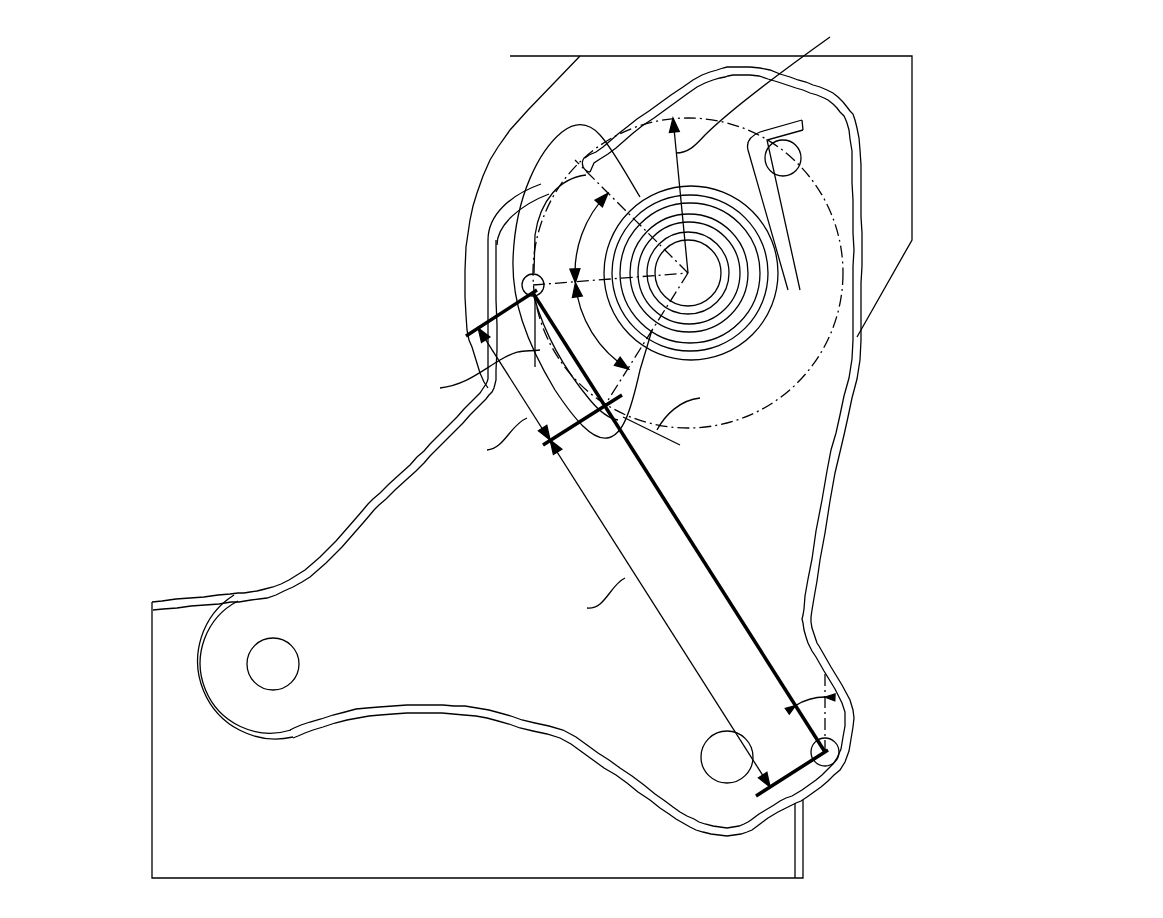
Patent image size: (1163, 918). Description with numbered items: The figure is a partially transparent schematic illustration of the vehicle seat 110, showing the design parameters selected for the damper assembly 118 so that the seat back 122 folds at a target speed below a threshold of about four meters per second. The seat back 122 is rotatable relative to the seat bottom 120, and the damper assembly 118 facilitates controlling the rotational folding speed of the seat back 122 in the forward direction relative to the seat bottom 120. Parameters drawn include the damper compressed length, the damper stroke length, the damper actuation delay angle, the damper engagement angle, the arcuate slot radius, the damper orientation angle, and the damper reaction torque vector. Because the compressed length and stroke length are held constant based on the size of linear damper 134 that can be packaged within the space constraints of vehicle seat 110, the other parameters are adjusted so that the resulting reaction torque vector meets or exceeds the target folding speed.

The vehicle seat 110 is at (445, 80).
The damper assembly 118 is at (882, 408).
The seat bottom 120 is at (806, 840).
The seat back 122 is at (887, 290).
The linear damper 134 is at (765, 588).